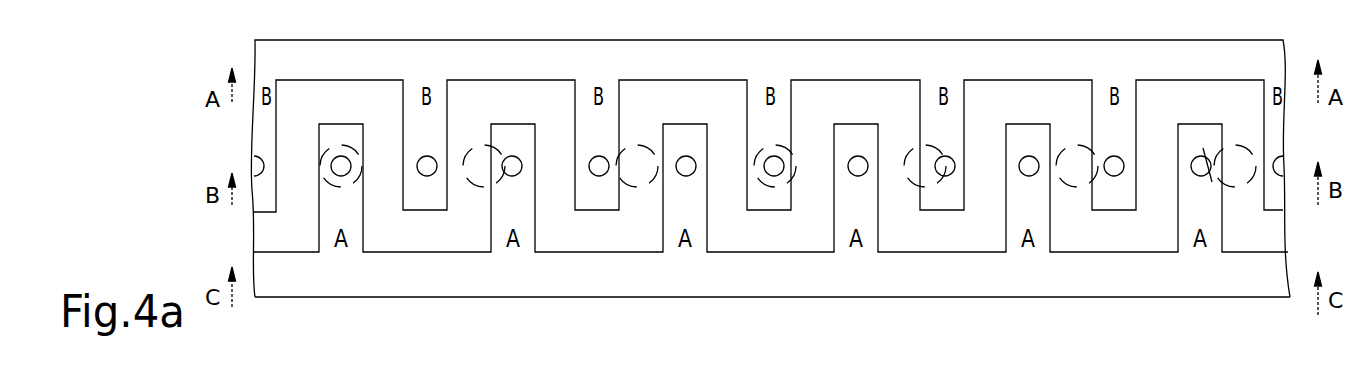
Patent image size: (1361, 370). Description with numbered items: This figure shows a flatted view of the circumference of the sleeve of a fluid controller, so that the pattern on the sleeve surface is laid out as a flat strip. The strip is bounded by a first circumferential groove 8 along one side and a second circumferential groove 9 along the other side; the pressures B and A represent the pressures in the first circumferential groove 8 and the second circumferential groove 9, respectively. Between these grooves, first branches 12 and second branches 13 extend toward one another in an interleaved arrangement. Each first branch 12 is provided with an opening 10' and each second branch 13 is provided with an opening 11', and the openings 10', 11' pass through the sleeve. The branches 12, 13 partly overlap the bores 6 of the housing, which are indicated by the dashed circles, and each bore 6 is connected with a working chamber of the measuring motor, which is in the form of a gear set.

The bore 6 is at (1236, 143).
The first circumferential groove 8 is at (868, 60).
The second circumferential groove 9 is at (1227, 280).
The opening 10' is at (390, 90).
The opening 11' is at (530, 90).
The first branch 12 is at (435, 105).
The second branch 13 is at (677, 133).